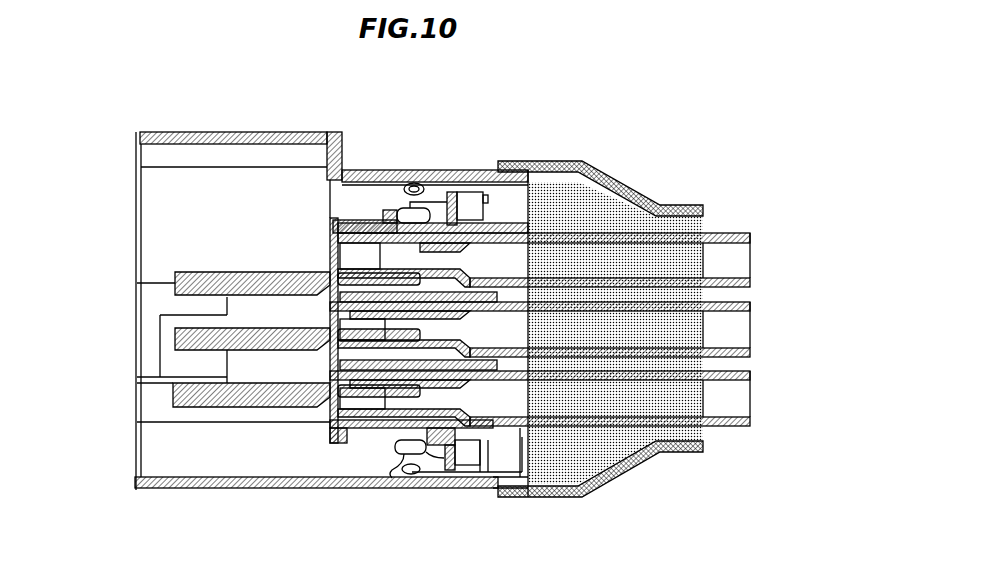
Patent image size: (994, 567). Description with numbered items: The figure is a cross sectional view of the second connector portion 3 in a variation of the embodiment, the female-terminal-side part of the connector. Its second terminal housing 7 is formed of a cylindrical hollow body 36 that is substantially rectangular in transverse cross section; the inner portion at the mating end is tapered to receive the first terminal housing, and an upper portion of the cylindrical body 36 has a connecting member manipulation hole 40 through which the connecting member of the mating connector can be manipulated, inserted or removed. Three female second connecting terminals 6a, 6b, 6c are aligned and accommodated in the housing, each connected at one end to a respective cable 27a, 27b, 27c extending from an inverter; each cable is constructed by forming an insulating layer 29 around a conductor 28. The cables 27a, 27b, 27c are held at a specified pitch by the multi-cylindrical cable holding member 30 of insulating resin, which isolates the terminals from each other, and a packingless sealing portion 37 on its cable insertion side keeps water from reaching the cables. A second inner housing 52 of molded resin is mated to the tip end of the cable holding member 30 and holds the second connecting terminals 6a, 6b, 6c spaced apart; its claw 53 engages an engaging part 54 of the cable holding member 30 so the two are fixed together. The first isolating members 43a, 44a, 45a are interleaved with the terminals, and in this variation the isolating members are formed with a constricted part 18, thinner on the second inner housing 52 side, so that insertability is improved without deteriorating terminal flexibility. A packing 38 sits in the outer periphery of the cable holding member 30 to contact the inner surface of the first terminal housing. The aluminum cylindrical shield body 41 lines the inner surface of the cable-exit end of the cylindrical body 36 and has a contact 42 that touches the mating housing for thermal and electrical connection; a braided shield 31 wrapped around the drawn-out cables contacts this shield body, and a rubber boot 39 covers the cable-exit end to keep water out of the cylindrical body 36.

The second connector portion 3 is at (142, 108).
The connecting member manipulation hole 40 is at (192, 140).
The second terminal housing 7 is at (208, 489).
The constricted part 18 is at (320, 403).
The second inner housing 52 is at (357, 443).
The contact 42 is at (404, 187).
The cylindrical body 36 is at (408, 182).
The cylindrical shield body 41 is at (470, 471).
The packing 38 is at (403, 451).
The cable holding member 30 is at (488, 490).
The packingless sealing portion 37 is at (535, 440).
The second connecting terminal 6a is at (280, 272).
The second connecting terminal 6b is at (283, 328).
The second connecting terminal 6c is at (283, 383).
The first isolating member 43a is at (175, 291).
The first isolating member 44a is at (175, 344).
The first isolating member 45a is at (175, 395).
The claw 53 is at (332, 311).
The engaging part 54 is at (332, 361).
The braided shield 31 is at (607, 202).
The rubber boot 39 is at (557, 162).
The cable 27a is at (753, 240).
The cable 27b is at (753, 310).
The cable 27c is at (753, 379).
The conductor 28 is at (748, 263).
The insulating layer 29 is at (750, 283).